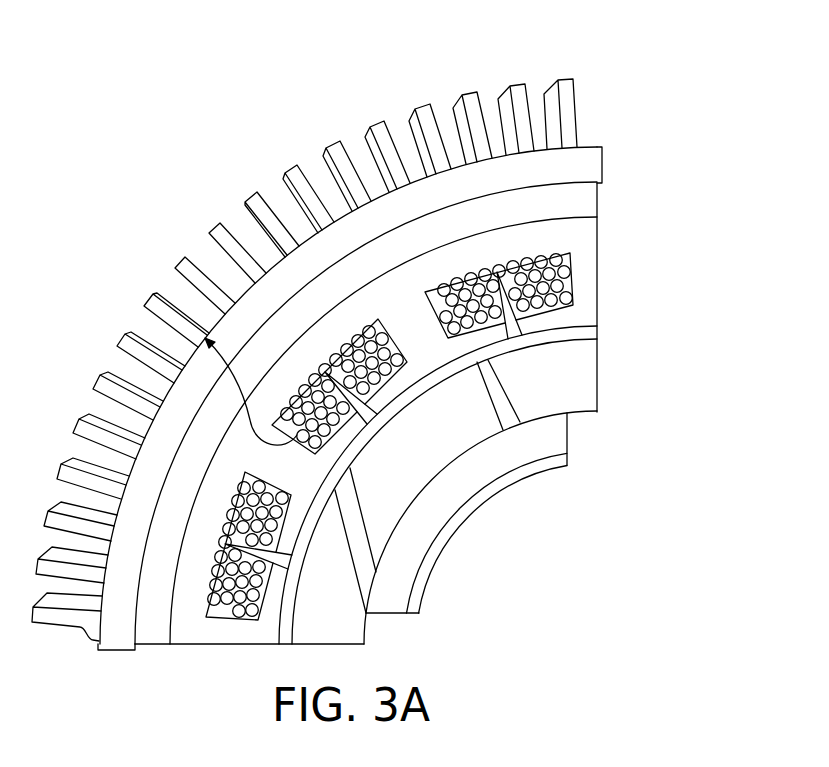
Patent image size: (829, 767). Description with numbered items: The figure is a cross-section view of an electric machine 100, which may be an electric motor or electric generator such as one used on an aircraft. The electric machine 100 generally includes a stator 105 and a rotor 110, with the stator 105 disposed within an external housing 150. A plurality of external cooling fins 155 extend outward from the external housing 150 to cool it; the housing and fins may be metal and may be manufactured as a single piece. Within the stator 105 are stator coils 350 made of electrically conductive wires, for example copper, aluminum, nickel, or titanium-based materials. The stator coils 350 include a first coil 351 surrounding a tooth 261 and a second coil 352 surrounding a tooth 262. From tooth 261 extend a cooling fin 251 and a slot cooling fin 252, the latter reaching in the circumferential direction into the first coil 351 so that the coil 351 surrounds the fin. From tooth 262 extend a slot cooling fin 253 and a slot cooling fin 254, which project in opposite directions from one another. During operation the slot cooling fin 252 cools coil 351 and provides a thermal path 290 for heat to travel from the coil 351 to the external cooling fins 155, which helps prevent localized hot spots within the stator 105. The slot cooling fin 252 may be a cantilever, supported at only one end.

The electric machine 100 is at (213, 60).
The stator 105 is at (598, 233).
The rotor 110 is at (598, 362).
The external housing 150 is at (598, 168).
The external cooling fins 155 is at (562, 82).
The cooling fin 251 is at (290, 480).
The slot cooling fin 252 is at (335, 438).
The slot cooling fin 253 is at (383, 330).
The slot cooling fin 254 is at (500, 350).
The tooth 261 is at (288, 472).
The tooth 262 is at (420, 343).
The thermal path 290 is at (245, 392).
The stator coils 350 is at (307, 377).
The first coil 351 is at (235, 510).
The second coil 352 is at (460, 292).